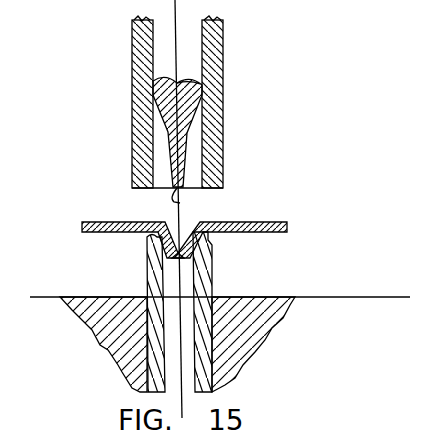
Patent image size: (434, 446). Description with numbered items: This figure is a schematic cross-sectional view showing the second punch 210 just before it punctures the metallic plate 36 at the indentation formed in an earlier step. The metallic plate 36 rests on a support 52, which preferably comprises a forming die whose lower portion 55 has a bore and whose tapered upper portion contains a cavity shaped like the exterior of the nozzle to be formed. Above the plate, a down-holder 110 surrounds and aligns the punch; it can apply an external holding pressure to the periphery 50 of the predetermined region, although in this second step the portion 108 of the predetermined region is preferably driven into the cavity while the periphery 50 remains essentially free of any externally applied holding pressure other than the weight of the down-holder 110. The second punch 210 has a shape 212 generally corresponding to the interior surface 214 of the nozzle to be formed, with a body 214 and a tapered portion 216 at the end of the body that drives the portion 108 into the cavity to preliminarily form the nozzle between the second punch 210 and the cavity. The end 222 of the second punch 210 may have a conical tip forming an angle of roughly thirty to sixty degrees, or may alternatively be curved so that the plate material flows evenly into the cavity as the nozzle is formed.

The metallic plate 36 is at (120, 219).
The periphery 50 is at (230, 214).
The support 52 is at (235, 377).
The lower portion 55 is at (212, 287).
The portion 108 is at (150, 245).
The down-holder 110 is at (223, 138).
The second punch 210 is at (165, 132).
The shape 212 is at (192, 165).
The body 214 is at (195, 127).
The tapered portion 216 is at (222, 113).
The end 222 is at (180, 203).